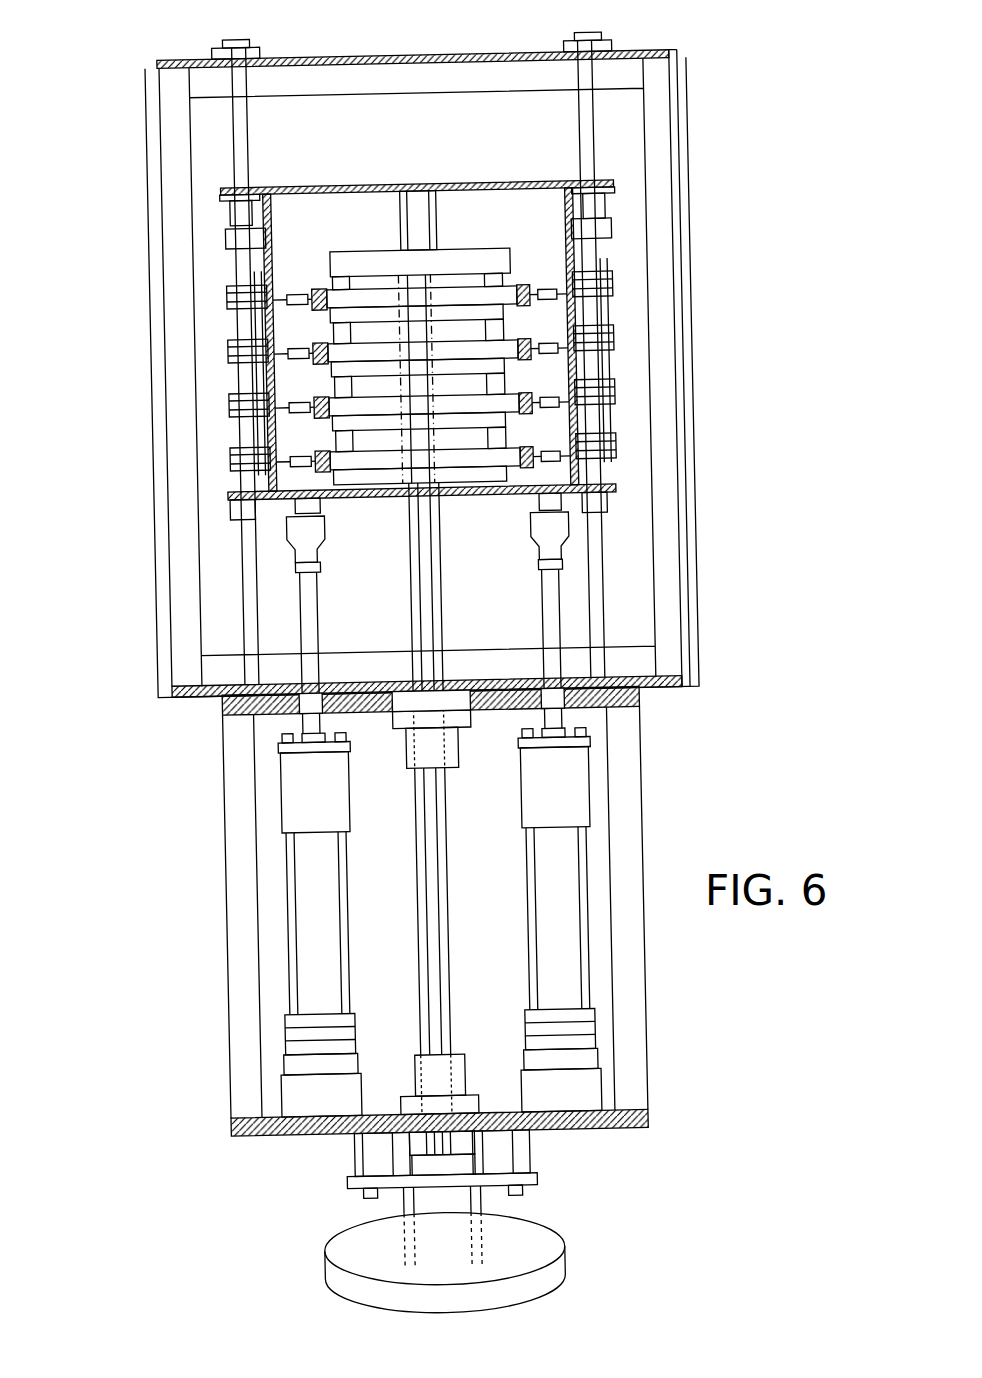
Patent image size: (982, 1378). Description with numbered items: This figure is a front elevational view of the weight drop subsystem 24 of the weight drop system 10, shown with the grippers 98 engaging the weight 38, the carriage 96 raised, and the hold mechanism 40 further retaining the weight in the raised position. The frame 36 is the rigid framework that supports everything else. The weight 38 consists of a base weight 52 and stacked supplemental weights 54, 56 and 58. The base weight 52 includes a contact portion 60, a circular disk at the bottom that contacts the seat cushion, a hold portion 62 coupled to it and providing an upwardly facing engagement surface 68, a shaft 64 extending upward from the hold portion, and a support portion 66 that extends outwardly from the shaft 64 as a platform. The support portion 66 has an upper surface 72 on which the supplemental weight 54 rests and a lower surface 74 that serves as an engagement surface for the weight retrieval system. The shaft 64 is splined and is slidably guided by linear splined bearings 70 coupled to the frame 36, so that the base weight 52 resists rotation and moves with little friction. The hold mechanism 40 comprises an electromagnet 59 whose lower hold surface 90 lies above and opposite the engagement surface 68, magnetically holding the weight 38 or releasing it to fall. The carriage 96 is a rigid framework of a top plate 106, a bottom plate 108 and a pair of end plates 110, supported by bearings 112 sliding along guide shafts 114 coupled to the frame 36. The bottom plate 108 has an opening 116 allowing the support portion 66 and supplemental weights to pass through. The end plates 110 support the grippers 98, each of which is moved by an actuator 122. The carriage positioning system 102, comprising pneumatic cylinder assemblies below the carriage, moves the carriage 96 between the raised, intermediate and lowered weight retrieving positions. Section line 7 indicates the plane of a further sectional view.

The weight drop system 10 is at (133, 32).
The weight drop subsystem 24 is at (493, 52).
The frame 36 is at (697, 81).
The guide shafts 114 is at (256, 122).
The carriage 96 is at (335, 177).
The top plate 106 is at (491, 180).
The bearings 112 is at (236, 215).
The end plates 110 is at (239, 228).
The weight 38 is at (331, 252).
The upper surface 72 is at (470, 390).
The supplemental weight 58 is at (508, 274).
The supplemental weight 56 is at (612, 322).
The supplemental weight 54 is at (612, 380).
The base weight 52 is at (622, 432).
The grippers 98 is at (267, 266).
The actuator 122 is at (235, 286).
The bottom plate 108 is at (234, 502).
The opening 116 is at (303, 497).
The lower surface 74 is at (553, 498).
The support portion 66 is at (490, 498).
The section line 7 is at (366, 504).
The shaft 64 is at (438, 913).
The bearings 70 is at (448, 742).
The carriage positioning system 102 is at (270, 788).
The hold mechanism 40 is at (520, 1147).
The engagement surface 68 is at (486, 1141).
The electromagnet 59 is at (334, 1148).
The hold portion 62 is at (454, 1173).
The lower hold surface 90 is at (335, 1183).
The contact portion 60 is at (547, 1262).